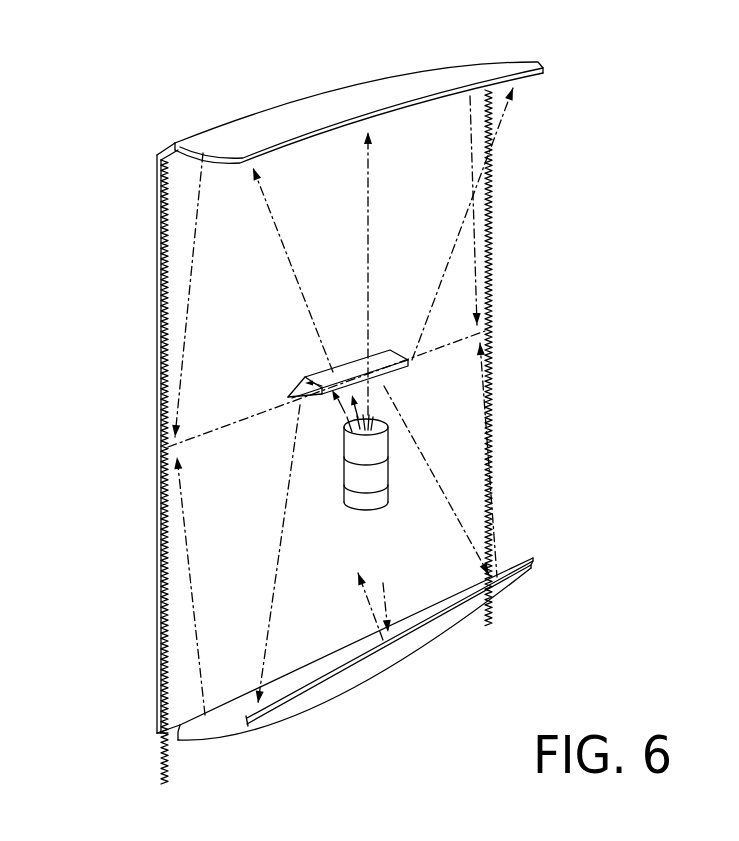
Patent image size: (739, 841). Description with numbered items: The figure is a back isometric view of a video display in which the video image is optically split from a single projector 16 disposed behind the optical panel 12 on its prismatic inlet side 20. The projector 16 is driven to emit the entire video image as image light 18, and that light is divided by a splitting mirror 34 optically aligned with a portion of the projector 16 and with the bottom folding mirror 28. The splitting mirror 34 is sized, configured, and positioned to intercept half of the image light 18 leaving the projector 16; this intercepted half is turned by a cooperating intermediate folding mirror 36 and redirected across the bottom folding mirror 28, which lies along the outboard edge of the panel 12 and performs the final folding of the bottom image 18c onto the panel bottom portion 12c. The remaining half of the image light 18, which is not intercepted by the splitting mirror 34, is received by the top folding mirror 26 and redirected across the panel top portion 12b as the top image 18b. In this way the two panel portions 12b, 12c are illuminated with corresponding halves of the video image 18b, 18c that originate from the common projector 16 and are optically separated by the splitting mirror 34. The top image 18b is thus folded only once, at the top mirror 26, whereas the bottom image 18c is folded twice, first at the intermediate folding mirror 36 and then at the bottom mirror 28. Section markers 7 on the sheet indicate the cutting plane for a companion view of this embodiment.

The section line of FIG. 7 is at (33, 220).
The optical panel 12 is at (144, 278).
The panel top portion 12b is at (268, 373).
The panel bottom portion 12c is at (268, 508).
The projector 16 is at (390, 495).
The image light 18 is at (343, 415).
The top image 18b is at (190, 278).
The bottom image 18c is at (268, 606).
The prismatic inlet side 20 is at (158, 610).
The top folding mirror 26 is at (519, 62).
The bottom folding mirror 28 is at (523, 568).
The splitting mirror 34 is at (400, 352).
The intermediate folding mirror 36 is at (350, 360).